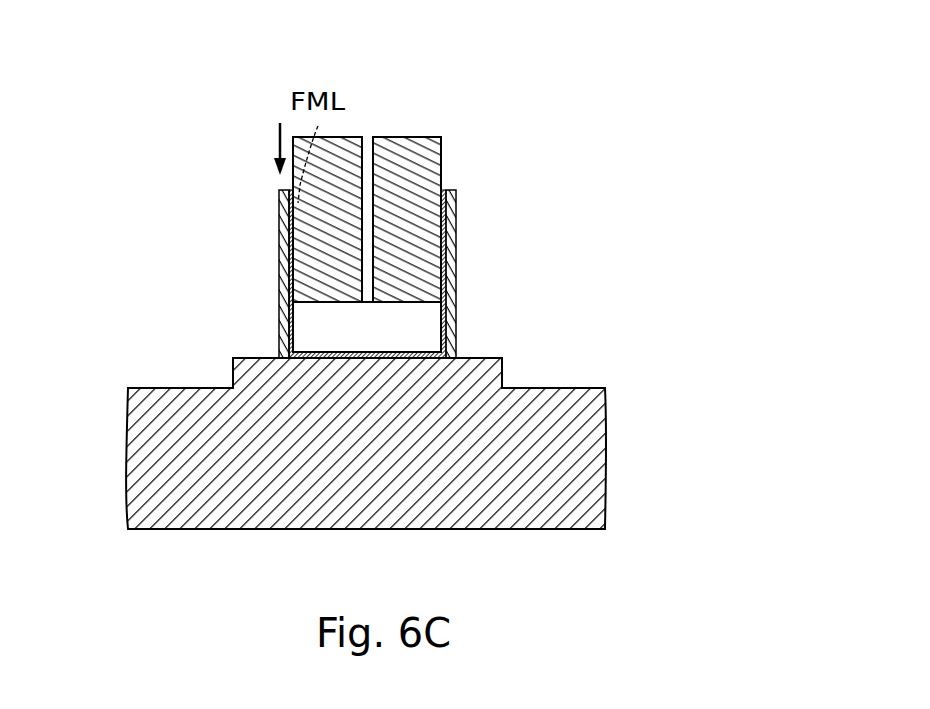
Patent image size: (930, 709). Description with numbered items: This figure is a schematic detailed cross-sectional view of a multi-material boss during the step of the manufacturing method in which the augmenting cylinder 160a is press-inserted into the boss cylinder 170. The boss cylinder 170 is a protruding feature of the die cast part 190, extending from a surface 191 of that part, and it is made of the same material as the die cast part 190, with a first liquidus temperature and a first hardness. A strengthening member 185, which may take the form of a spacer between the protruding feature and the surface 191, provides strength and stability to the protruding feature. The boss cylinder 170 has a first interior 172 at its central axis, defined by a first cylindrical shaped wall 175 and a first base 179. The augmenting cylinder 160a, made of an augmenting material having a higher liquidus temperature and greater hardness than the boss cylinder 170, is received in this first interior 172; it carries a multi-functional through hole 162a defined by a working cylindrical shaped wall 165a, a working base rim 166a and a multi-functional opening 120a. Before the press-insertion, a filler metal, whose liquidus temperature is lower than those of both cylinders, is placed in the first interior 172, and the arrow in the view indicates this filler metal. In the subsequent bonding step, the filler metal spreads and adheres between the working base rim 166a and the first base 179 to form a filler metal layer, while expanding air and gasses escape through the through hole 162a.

The multi-functional opening 120a is at (375, 130).
The multi-functional through hole 162a is at (385, 183).
The augmenting cylinder 160a is at (458, 157).
The working cylindrical shaped wall 165a is at (444, 258).
The working base rim 166a is at (400, 305).
The boss cylinder 170 is at (391, 185).
The first cylindrical shaped wall 175 is at (279, 287).
The first interior 172 is at (280, 329).
The surface 191 is at (168, 387).
The strengthening member 185 is at (233, 365).
The first base 179 is at (365, 358).
The die cast part 190 is at (590, 453).